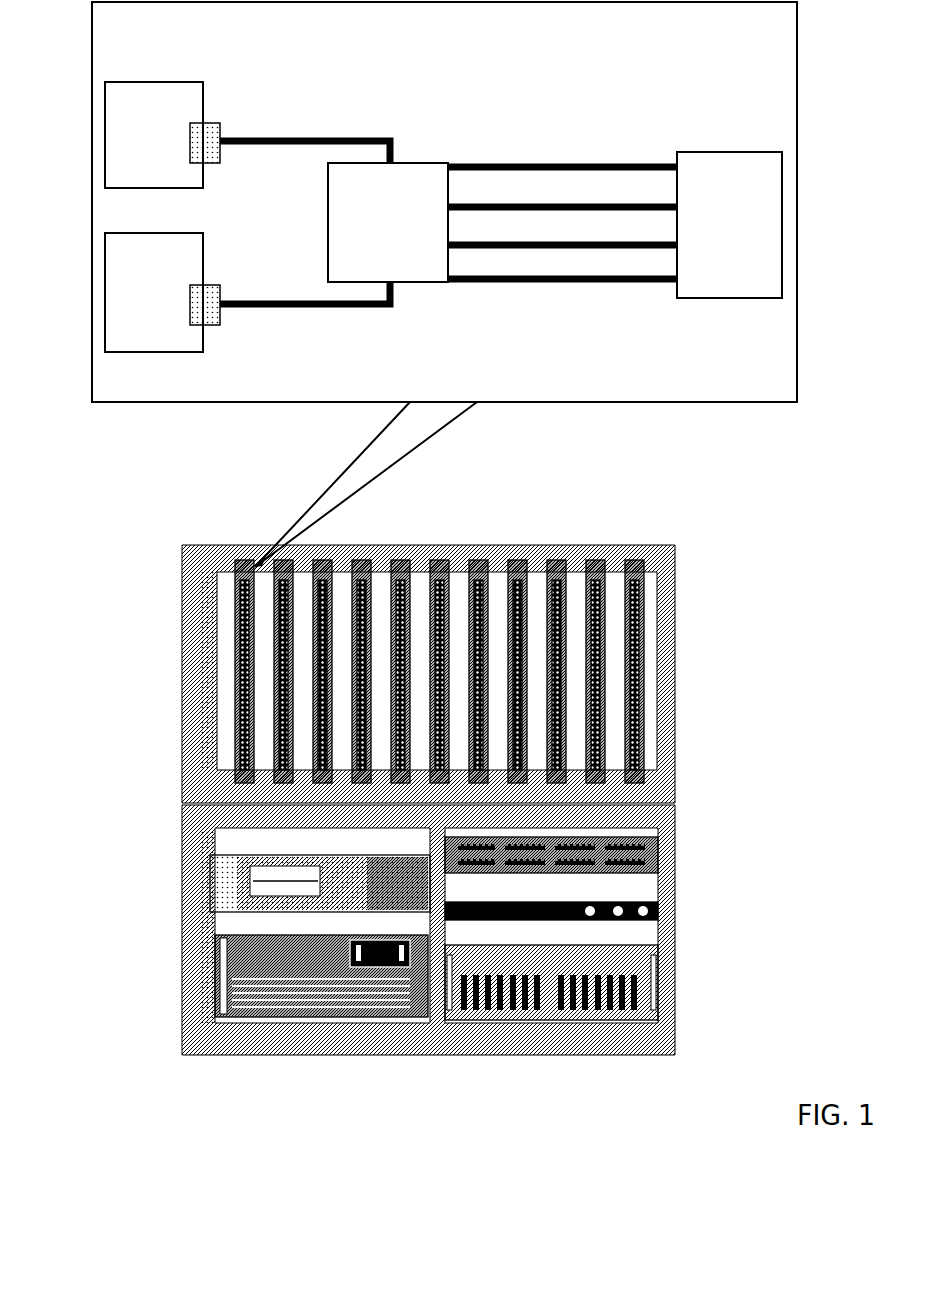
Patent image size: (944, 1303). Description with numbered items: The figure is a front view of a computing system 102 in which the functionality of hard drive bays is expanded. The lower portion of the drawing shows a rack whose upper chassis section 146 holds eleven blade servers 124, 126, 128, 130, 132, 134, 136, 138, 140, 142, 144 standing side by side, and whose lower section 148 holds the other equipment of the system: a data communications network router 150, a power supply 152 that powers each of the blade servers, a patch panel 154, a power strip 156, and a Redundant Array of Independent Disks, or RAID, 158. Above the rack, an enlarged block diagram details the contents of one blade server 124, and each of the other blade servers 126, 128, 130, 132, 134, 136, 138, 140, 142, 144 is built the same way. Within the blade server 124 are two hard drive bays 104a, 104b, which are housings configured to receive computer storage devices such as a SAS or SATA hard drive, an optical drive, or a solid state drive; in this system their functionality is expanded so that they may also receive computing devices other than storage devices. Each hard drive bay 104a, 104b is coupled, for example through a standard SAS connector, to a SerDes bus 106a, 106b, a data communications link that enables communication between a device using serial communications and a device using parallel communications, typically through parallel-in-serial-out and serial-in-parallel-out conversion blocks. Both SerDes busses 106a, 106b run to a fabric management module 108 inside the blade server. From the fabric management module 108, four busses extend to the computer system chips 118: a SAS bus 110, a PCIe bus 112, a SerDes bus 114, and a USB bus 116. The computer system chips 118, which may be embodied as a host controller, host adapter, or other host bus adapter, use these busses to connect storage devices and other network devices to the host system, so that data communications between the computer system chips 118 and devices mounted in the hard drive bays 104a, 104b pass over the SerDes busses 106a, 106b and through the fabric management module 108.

The computing system 102 is at (302, 1068).
The hard drive bay 104a is at (175, 170).
The hard drive bay 104b is at (175, 327).
The SerDes bus 106a is at (227, 138).
The SerDes bus 106b is at (227, 301).
The fabric management module 108 is at (402, 269).
The SAS bus 110 is at (493, 164).
The PCIe bus 112 is at (553, 204).
The SerDes bus 114 is at (518, 249).
The USB bus 116 is at (602, 283).
The computer system chips 118 is at (745, 274).
The blade server 124 is at (243, 558).
The blade server 126 is at (282, 558).
The blade server 128 is at (321, 558).
The blade server 130 is at (360, 558).
The blade server 132 is at (399, 558).
The blade server 134 is at (438, 558).
The blade server 136 is at (477, 558).
The blade server 138 is at (516, 558).
The blade server 140 is at (555, 558).
The blade server 142 is at (594, 558).
The blade server 144 is at (633, 558).
The blade server chassis 146 is at (187, 585).
The equipment rack 148 is at (182, 842).
The data communications network router 150 is at (180, 876).
The power supply 152 is at (180, 972).
The patch panel 154 is at (682, 854).
The power strip 156 is at (682, 910).
The Redundant Array of Independent Disks (RAID) 158 is at (682, 984).